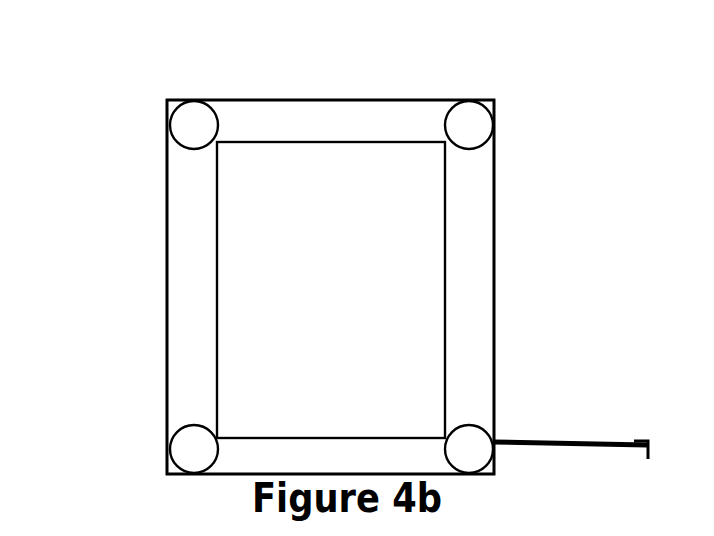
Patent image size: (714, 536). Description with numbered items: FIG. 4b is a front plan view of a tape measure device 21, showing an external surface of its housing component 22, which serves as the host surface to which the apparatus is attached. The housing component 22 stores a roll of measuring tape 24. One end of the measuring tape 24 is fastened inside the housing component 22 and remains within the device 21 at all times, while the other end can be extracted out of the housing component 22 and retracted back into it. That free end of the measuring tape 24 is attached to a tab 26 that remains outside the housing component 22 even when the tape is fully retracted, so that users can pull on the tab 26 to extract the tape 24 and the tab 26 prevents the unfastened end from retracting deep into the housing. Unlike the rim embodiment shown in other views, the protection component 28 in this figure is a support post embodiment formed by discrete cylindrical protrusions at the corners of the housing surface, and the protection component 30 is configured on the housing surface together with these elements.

The host device 21 is at (80, 90).
The housing component 22 is at (493, 200).
The measuring tape 24 is at (584, 431).
The tab 26 is at (647, 426).
The protection component 28 is at (413, 267).
The protection component 30 is at (487, 124).